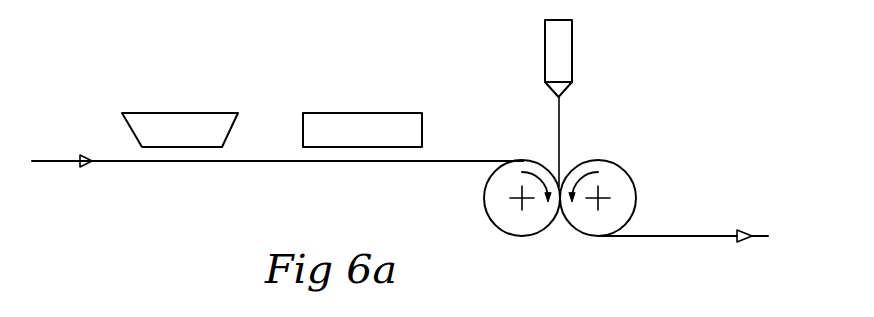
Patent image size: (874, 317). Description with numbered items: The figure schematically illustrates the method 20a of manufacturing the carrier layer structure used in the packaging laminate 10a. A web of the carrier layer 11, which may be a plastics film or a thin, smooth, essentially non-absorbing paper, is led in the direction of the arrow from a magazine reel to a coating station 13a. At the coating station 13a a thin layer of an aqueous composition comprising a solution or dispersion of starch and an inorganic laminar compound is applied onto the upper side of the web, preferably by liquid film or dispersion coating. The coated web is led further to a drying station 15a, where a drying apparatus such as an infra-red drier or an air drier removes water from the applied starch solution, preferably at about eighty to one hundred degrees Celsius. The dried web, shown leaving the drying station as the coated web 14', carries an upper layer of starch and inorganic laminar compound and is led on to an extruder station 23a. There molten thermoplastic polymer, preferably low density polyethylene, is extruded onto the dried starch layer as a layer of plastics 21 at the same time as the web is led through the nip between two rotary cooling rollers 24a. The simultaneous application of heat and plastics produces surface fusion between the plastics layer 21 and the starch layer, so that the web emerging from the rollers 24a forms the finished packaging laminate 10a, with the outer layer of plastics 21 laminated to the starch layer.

The carrier layer 11 is at (52, 161).
The coating station 13a is at (182, 113).
The drying station 15a is at (367, 113).
The coated web 14' is at (476, 128).
The extruder station 23a is at (593, 103).
The method of manufacturing 20a is at (744, 89).
The rotary cooling rollers 24a is at (635, 186).
The layer of plastics 21 is at (700, 236).
The packaging laminate 10a is at (775, 233).